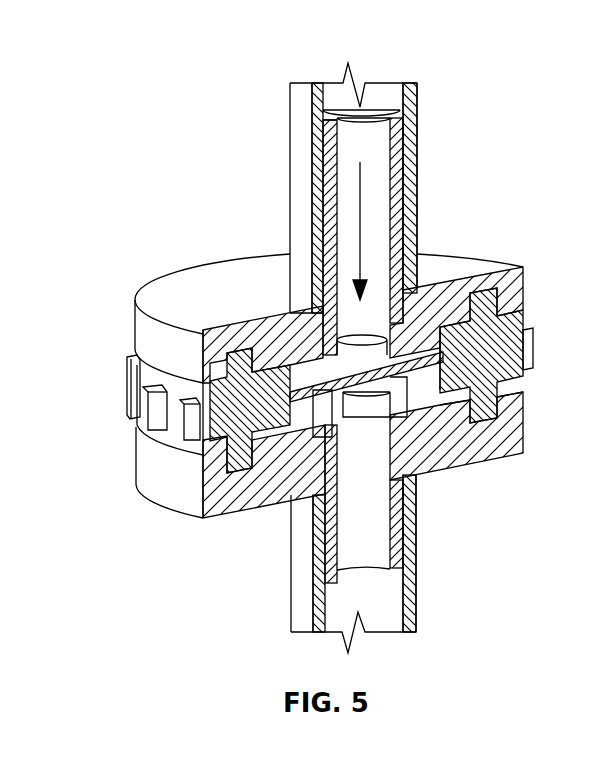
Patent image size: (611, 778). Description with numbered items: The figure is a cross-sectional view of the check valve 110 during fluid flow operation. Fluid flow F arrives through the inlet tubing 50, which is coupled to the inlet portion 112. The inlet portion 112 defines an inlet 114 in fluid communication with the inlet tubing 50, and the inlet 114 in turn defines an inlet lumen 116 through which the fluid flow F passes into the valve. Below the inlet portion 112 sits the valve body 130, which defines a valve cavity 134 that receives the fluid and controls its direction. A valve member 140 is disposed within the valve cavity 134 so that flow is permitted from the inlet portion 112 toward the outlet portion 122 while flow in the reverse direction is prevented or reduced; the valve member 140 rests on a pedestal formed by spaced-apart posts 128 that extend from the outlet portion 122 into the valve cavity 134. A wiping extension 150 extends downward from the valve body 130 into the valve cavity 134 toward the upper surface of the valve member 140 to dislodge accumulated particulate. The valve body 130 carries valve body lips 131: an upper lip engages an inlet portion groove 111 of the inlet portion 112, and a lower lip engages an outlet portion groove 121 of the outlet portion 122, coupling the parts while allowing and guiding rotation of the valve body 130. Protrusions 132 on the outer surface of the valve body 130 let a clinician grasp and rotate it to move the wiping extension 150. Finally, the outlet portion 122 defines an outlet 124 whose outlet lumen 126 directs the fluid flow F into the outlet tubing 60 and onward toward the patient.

The check valve 110 is at (466, 38).
The inlet tubing 50 is at (403, 97).
The inlet lumen 116 is at (363, 147).
The inlet 114 is at (333, 172).
The fluid flow F is at (365, 227).
The valve member 140 is at (375, 343).
The inlet portion groove 111 is at (240, 348).
The inlet portion 112 is at (170, 287).
The wiping extension 150 is at (380, 368).
The valve cavity 134 is at (432, 375).
The valve body 130 is at (512, 355).
The valve body lips 131 is at (490, 405).
The protrusions 132 is at (130, 390).
The outlet portion groove 121 is at (253, 457).
The outlet portion 122 is at (212, 520).
The posts 128 is at (325, 425).
The outlet 124 is at (396, 527).
The outlet lumen 126 is at (363, 569).
The outlet tubing 60 is at (413, 628).